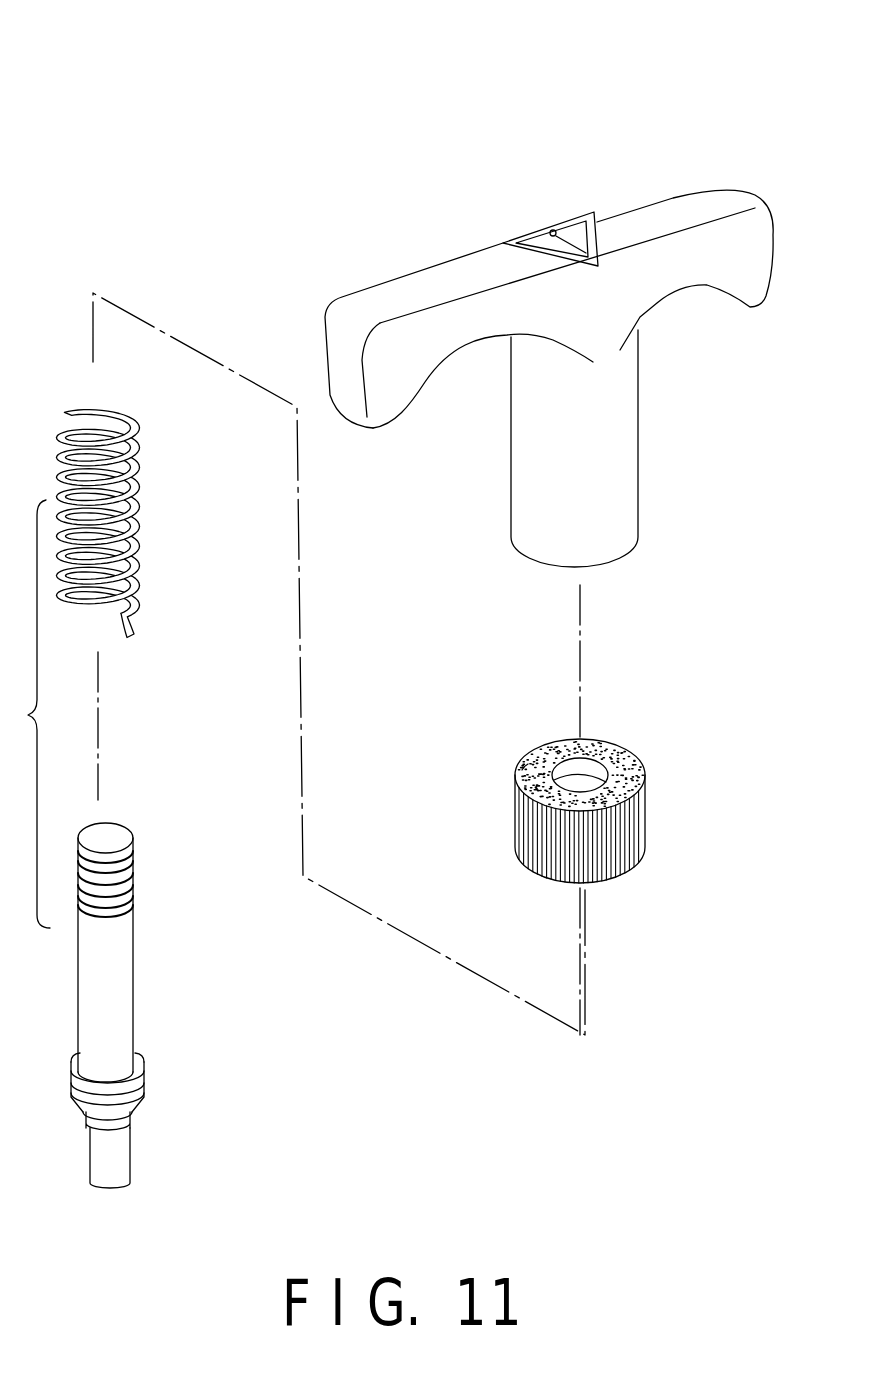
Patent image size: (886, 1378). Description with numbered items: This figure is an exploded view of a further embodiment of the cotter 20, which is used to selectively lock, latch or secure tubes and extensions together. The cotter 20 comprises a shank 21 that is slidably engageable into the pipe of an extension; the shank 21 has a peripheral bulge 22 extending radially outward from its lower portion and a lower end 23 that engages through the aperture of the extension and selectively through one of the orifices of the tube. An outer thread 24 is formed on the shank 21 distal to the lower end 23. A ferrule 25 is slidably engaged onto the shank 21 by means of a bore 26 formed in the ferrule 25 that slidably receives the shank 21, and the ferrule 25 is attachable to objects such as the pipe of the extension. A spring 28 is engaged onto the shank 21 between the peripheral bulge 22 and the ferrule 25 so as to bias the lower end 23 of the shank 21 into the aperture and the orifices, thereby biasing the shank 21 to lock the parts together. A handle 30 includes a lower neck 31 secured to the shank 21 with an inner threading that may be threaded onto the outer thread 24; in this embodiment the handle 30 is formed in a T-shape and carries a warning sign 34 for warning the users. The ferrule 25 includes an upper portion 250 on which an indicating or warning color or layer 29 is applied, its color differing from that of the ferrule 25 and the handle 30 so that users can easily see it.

The cotter 20 is at (393, 112).
The shank 21 is at (118, 985).
The peripheral bulge 22 is at (145, 1063).
The lower end 23 is at (118, 1163).
The outer thread 24 is at (120, 878).
The ferrule 25 is at (642, 843).
The bore 26 is at (628, 752).
The spring 28 is at (135, 498).
The indicating or warning color or layer 29 is at (593, 740).
The handle 30 is at (607, 457).
The lower neck 31 is at (613, 533).
The warning sign 34 is at (580, 212).
The upper portion 250 is at (522, 762).